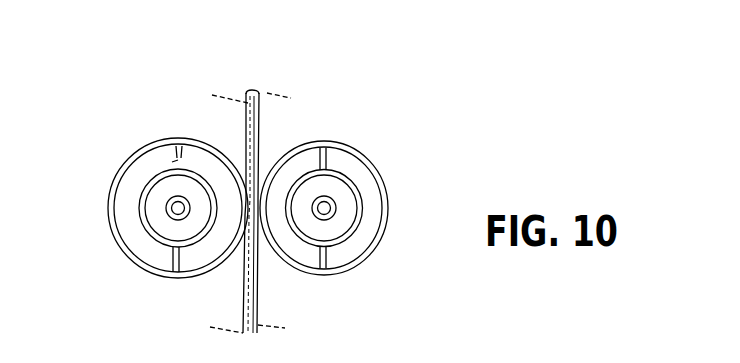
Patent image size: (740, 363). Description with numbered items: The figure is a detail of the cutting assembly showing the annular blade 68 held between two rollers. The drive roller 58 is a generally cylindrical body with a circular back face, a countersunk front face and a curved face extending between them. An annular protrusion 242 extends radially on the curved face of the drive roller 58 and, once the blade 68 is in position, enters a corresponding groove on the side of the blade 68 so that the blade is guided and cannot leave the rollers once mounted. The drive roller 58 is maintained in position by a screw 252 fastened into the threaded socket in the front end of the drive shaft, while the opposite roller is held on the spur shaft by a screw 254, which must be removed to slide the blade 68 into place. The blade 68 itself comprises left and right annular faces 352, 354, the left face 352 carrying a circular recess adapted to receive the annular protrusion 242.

The drive roller 58 is at (147, 165).
The annular protrusion 242 is at (180, 136).
The screw 252 is at (167, 208).
The screw 254 is at (336, 208).
The annular blade 68 is at (252, 211).
The left annular face 352 is at (244, 302).
The right annular face 354 is at (262, 121).